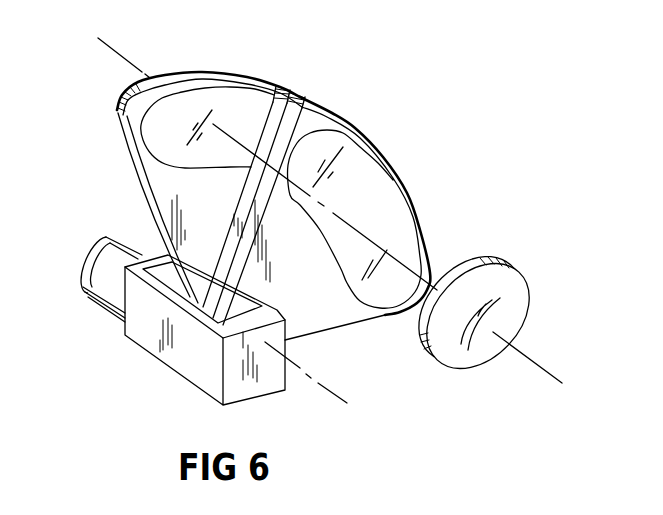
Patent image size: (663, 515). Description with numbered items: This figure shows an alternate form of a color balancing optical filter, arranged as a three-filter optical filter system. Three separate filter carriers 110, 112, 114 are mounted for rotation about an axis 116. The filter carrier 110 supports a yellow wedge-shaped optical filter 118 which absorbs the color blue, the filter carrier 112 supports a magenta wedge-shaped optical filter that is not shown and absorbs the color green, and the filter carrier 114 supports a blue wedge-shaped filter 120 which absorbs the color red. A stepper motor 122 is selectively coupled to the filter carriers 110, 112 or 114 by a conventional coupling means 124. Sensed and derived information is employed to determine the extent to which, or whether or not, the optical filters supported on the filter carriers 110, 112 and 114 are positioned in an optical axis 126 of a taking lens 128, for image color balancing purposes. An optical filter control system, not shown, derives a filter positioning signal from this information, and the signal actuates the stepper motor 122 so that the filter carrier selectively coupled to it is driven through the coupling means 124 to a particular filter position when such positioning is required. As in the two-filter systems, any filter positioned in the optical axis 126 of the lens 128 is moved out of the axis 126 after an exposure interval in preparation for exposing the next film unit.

The filter carrier 110 is at (160, 87).
The filter carrier 112 is at (300, 99).
The filter carrier 114 is at (332, 122).
The axis 116 is at (333, 387).
The yellow wedge-shaped optical filter 118 is at (160, 145).
The blue wedge-shaped filter 120 is at (408, 219).
The stepper motor 122 is at (106, 310).
The coupling means 124 is at (203, 382).
The optical axis 126 is at (438, 287).
The taking lens 128 is at (526, 286).